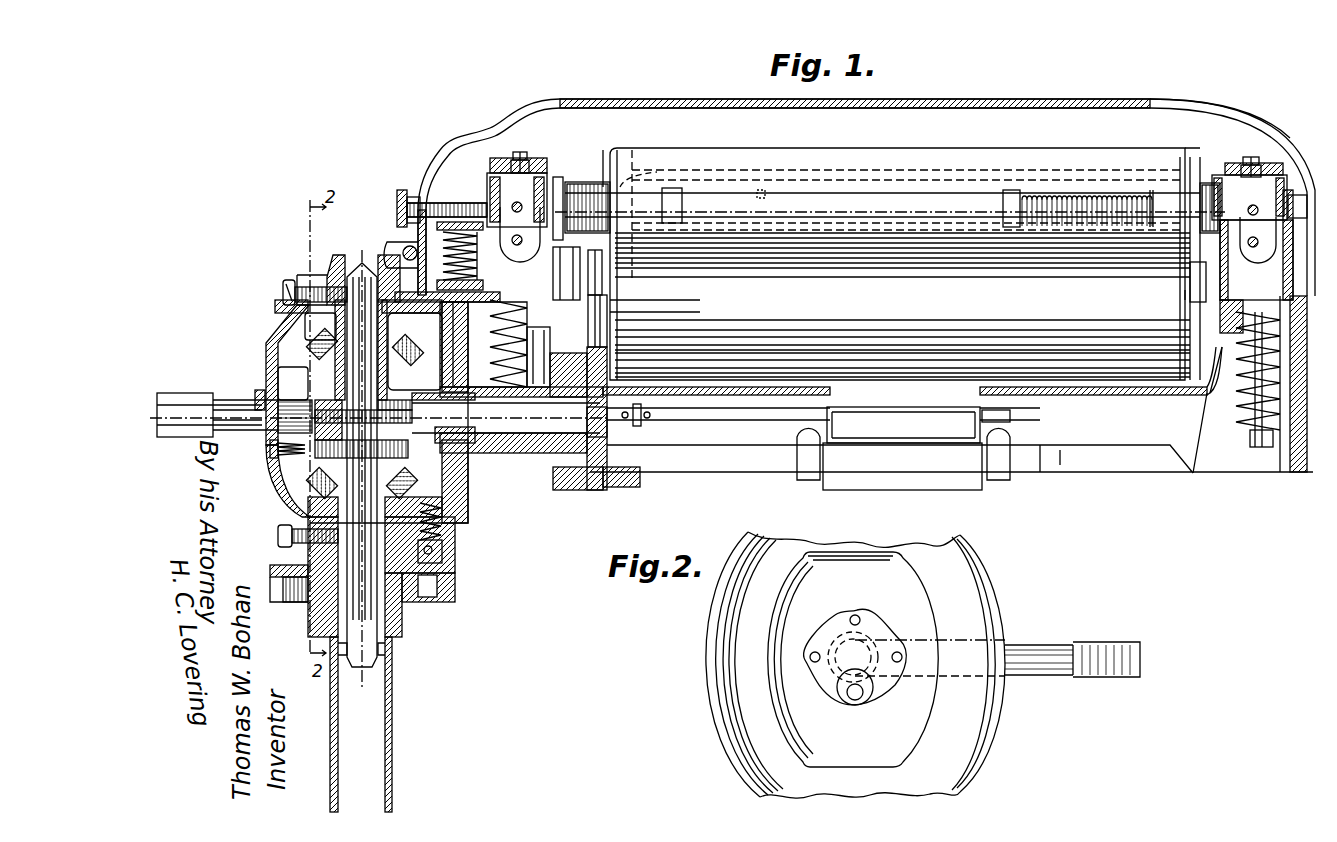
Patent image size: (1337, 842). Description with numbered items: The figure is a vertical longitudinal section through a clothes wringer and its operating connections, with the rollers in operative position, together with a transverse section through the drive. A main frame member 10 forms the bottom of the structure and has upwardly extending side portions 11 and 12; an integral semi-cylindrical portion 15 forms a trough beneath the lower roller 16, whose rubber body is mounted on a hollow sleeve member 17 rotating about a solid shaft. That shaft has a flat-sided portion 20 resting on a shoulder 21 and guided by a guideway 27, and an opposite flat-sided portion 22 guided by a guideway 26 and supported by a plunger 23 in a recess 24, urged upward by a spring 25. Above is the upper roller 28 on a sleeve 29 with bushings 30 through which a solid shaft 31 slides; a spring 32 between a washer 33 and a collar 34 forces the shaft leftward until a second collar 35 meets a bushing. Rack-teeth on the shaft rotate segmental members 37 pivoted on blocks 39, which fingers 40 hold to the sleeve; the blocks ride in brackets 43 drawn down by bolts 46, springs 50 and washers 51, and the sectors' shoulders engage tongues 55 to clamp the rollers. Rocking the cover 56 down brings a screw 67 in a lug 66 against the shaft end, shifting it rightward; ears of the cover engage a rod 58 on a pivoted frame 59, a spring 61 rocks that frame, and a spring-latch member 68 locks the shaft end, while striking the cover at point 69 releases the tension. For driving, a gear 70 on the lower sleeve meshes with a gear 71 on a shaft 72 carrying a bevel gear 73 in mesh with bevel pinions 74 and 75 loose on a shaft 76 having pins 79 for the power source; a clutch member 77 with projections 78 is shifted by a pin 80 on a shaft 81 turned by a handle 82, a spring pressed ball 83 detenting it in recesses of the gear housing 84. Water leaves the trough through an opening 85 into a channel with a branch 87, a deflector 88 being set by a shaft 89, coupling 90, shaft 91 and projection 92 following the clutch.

In FIG. 1, the main frame member 10 is at (1135, 472).
In FIG. 1, the side portion 11 is at (1295, 468).
In FIG. 1, the side portion 12 is at (602, 285).
In FIG. 1, the semi-cylindrical portion 15 is at (1010, 414).
In FIG. 1, the lower roller 16 is at (901, 264).
In FIG. 1, the hollow sleeve member 17 is at (1190, 290).
In FIG. 1, the flat-sided portion 20 is at (1220, 312).
In FIG. 1, the shoulder 21 is at (1200, 420).
In FIG. 1, the flat-sided portion 22 is at (640, 318).
In FIG. 1, the plunger 23 is at (545, 345).
In FIG. 1, the recess 24 is at (465, 344).
In FIG. 1, the spring 25 is at (530, 345).
In FIG. 1, the guideway 26 is at (565, 262).
In FIG. 1, the guideway 27 is at (1183, 298).
In FIG. 1, the upper roller 28 is at (942, 160).
In FIG. 1, the sleeve 29 is at (843, 180).
In FIG. 1, the bushing 30 is at (588, 182).
In FIG. 1, the solid shaft 31 is at (482, 205).
In FIG. 1, the spring 32 is at (1062, 195).
In FIG. 1, the washer 33 is at (1150, 190).
In FIG. 1, the collar 34 is at (1012, 190).
In FIG. 1, the second collar 35 is at (672, 188).
In FIG. 1, the segmental member 37 is at (560, 195).
In FIG. 1, the block 39 is at (505, 172).
In FIG. 1, the finger 40 is at (530, 165).
In FIG. 1, the bracket 43 is at (1232, 163).
In FIG. 1, the bolt 46 is at (520, 152).
In FIG. 1, the spring 50 is at (1255, 425).
In FIG. 1, the washer 51 is at (1258, 447).
In FIG. 1, the tongue 55 is at (505, 215).
In FIG. 1, the cover 56 is at (1262, 114).
In FIG. 1, the rod 58 is at (402, 248).
In FIG. 1, the frame 59 is at (407, 210).
In FIG. 1, the spring 61 is at (440, 270).
In FIG. 1, the lug 66 is at (440, 204).
In FIG. 1, the screw 67 is at (397, 195).
In FIG. 1, the spring-latch member 68 is at (1283, 265).
In FIG. 1, the point 69 is at (508, 120).
In FIG. 1, the gear 70 is at (607, 302).
In FIG. 1, the gear 71 is at (578, 490).
In FIG. 1, the shaft 72 is at (440, 495).
In FIG. 1, the bevel gear 73 is at (418, 358).
In FIG. 1, the bevel pinion 74 is at (312, 345).
In FIG. 1, the bevel pinion 75 is at (312, 485).
In FIG. 1, the shaft 76 is at (347, 368).
In FIG. 1, the clutch member 77 is at (312, 460).
In FIG. 1, the projection 78 is at (395, 400).
In FIG. 1, the pin 79 is at (386, 650).
In FIG. 1, the pin 80 is at (326, 400).
In FIG. 2, the pin 80 is at (845, 690).
In FIG. 1, the shaft 81 is at (270, 400).
In FIG. 2, the shaft 81 is at (868, 632).
In FIG. 1, the handle 82 is at (185, 400).
In FIG. 2, the handle 82 is at (1033, 652).
In FIG. 1, the spring pressed ball 83 is at (270, 450).
In FIG. 2, the spring pressed ball 83 is at (855, 705).
In FIG. 1, the gear housing 84 is at (340, 258).
In FIG. 1, the opening 85 is at (908, 400).
In FIG. 1, the branch 87 is at (903, 459).
In FIG. 1, the deflector 88 is at (903, 425).
In FIG. 1, the shaft 89 is at (740, 422).
In FIG. 1, the coupling 90 is at (645, 426).
In FIG. 1, the shaft 91 is at (617, 472).
In FIG. 1, the projection 92 is at (361, 510).